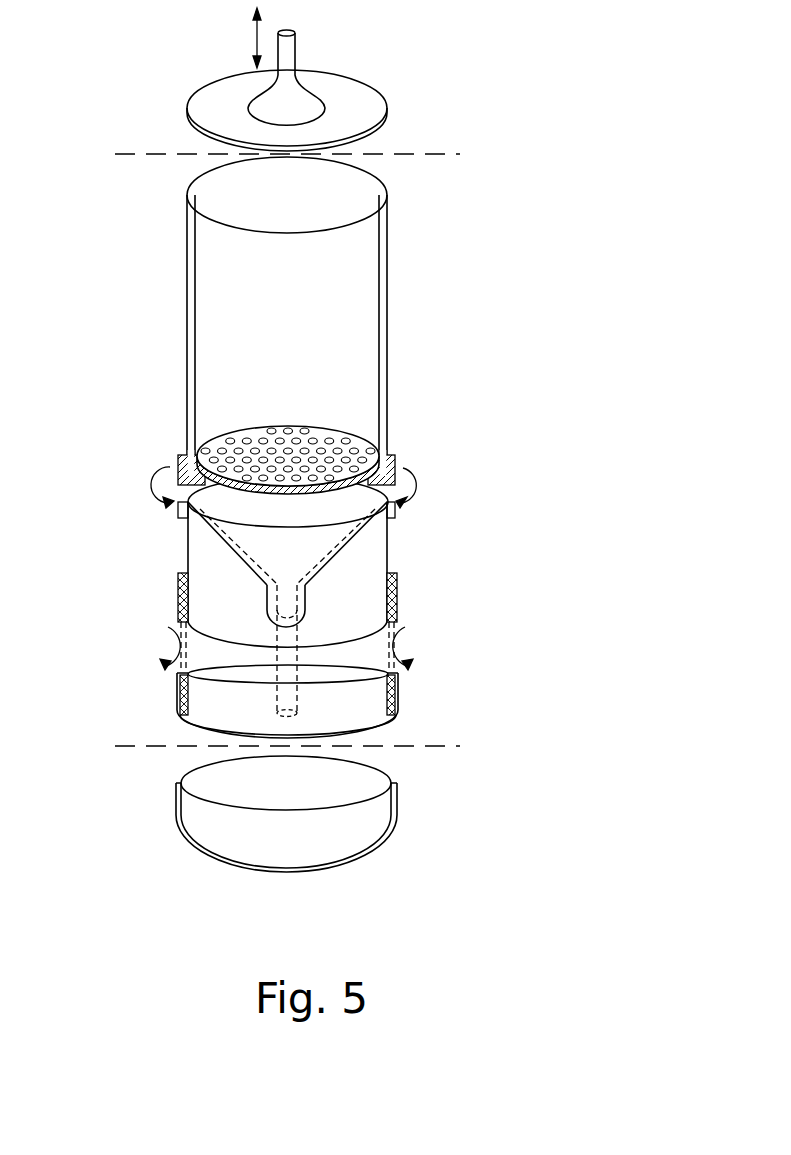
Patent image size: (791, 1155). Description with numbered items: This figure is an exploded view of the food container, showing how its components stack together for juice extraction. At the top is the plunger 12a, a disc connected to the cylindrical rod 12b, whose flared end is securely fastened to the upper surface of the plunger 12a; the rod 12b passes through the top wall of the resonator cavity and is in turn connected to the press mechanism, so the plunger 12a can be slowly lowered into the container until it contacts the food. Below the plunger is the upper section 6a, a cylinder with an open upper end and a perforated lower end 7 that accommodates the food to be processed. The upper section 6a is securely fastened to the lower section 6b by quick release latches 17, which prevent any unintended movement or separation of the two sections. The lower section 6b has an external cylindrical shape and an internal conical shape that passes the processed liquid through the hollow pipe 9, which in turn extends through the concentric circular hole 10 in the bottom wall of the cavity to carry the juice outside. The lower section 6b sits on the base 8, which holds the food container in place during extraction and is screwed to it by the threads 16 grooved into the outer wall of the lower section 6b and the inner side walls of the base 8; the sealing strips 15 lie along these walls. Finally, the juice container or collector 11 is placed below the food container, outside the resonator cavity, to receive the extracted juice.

The concentric circular hole 10 is at (157, 302).
The plunger 12a is at (375, 90).
The cylindrical rod 12b is at (296, 52).
The upper section 6a is at (365, 272).
The lower section 6b is at (207, 550).
The perforated lower end 7 is at (357, 438).
The quick release latches 17 is at (178, 457).
The hollow pipe 9 is at (305, 598).
The sealing strip ring 15 is at (165, 632).
The threads 16 is at (178, 688).
The base 8 is at (372, 708).
The juice container or collector 11 is at (372, 818).